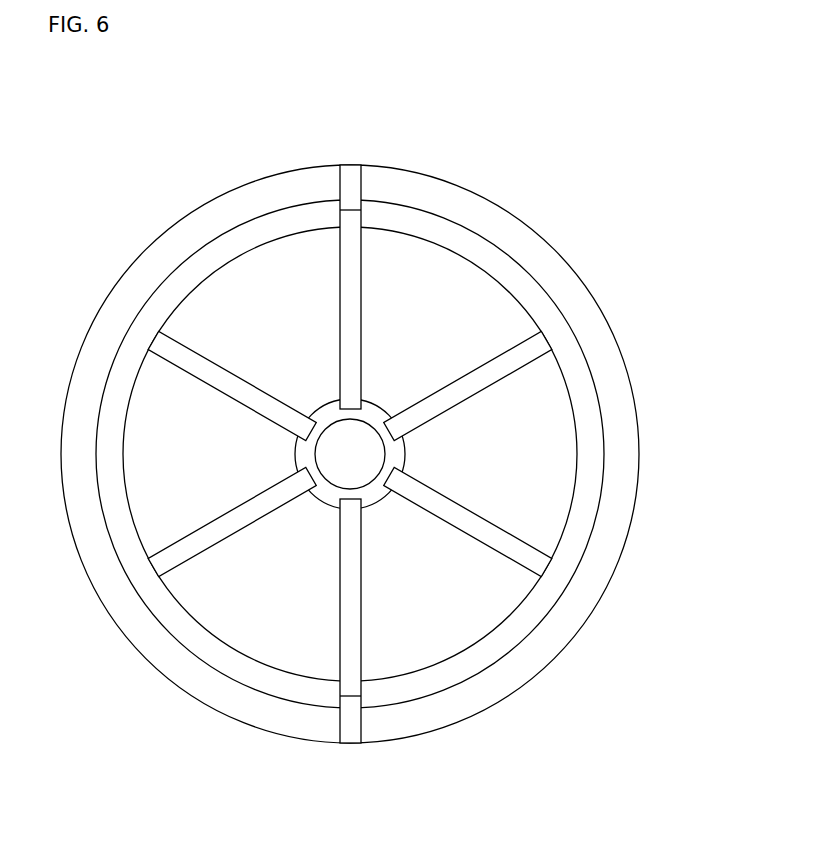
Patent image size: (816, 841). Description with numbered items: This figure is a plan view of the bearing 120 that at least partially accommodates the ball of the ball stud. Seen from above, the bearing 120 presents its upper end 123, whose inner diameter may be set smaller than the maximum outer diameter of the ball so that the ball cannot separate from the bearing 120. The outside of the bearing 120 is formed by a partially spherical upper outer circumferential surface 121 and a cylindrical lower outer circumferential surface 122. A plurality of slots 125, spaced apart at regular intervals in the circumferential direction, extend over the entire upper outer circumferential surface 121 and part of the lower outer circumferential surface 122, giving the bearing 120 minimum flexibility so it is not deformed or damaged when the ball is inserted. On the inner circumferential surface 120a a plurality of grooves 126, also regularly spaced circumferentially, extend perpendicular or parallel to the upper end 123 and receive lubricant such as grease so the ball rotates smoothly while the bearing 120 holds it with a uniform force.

The bearing 120 is at (390, 433).
The inner circumferential surface 120a is at (472, 318).
The upper outer circumferential surface 121 is at (597, 522).
The lower outer circumferential surface 122 is at (597, 605).
The upper end 123 is at (436, 226).
The slots 125 is at (352, 166).
The grooves 126 is at (484, 518).